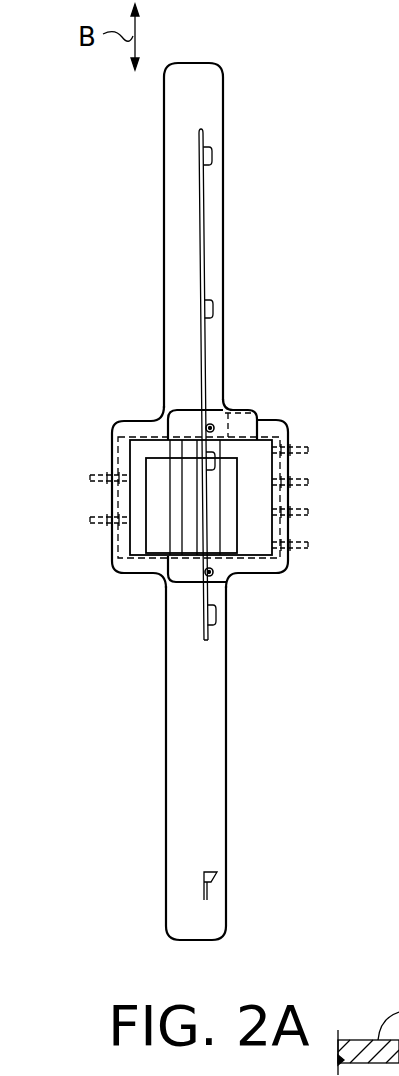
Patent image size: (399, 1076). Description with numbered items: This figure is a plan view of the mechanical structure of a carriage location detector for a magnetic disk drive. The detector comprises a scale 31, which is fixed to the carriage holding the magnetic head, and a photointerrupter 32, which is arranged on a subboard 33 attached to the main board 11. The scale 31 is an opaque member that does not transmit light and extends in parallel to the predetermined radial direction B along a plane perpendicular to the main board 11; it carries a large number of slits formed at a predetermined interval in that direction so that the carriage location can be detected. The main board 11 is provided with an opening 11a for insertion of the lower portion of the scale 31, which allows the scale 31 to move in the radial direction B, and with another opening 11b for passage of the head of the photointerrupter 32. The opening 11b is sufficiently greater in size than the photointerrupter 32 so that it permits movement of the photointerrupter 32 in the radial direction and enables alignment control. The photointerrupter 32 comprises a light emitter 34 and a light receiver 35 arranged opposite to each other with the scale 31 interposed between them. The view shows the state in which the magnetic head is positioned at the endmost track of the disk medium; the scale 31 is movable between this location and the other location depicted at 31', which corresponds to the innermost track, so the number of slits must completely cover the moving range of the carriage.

The main board 11 is at (118, 358).
The opening 11a is at (200, 92).
The opening 11b is at (292, 566).
The scale 31 is at (247, 384).
The location of scale 31' is at (256, 883).
The photointerrupter 32 is at (258, 498).
The subboard 33 is at (107, 462).
The light emitter 34 is at (158, 503).
The light receiver 35 is at (230, 472).